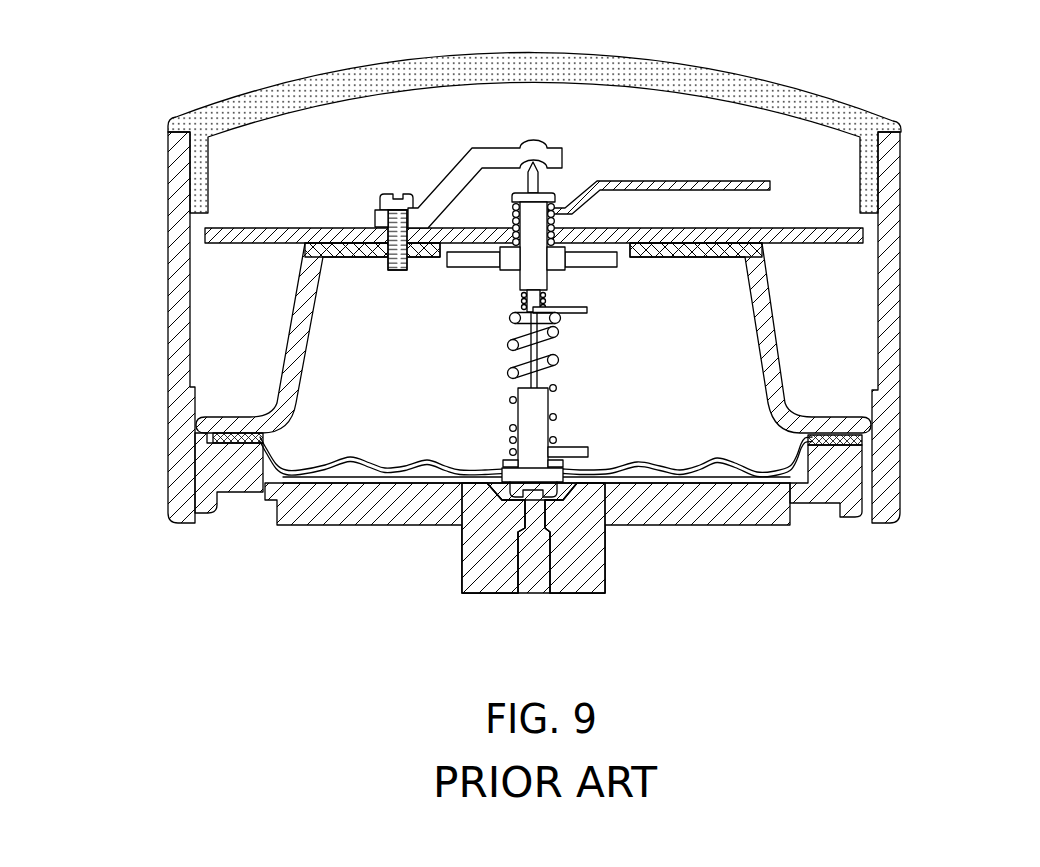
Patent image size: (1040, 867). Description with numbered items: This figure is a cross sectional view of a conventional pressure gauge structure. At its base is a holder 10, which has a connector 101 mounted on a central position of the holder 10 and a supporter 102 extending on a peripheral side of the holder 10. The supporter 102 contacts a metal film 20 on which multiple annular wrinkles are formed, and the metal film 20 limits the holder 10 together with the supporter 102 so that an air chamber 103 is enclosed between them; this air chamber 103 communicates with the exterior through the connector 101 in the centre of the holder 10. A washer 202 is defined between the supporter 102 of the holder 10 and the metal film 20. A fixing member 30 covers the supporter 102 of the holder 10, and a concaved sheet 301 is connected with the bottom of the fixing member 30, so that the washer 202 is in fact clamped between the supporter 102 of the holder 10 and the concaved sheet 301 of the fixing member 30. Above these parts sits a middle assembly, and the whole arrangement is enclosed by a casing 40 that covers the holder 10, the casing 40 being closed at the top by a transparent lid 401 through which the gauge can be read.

The holder 10 is at (327, 508).
The connector 101 is at (583, 558).
The supporter 102 is at (227, 460).
The air chamber 103 is at (386, 478).
The metal film 20 is at (717, 460).
The washer 202 is at (863, 447).
The fixing member 30 is at (770, 318).
The concaved sheet 301 is at (875, 497).
The casing 40 is at (175, 335).
The transparent lid 401 is at (750, 90).